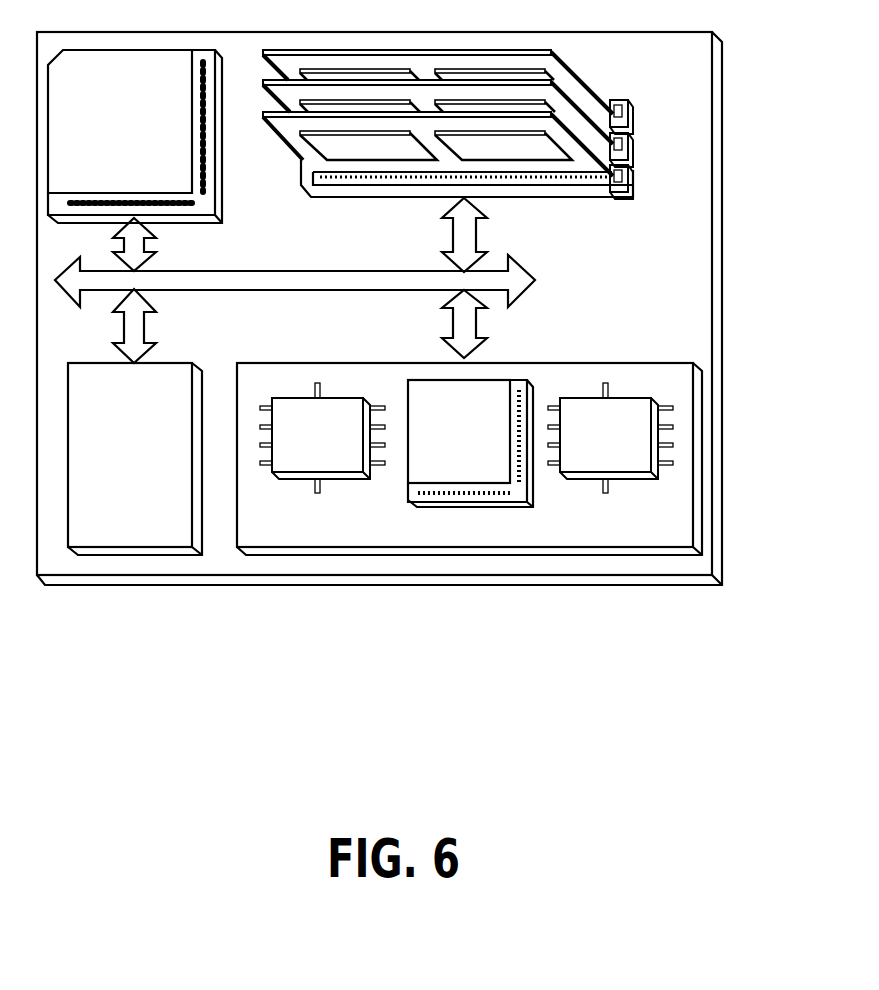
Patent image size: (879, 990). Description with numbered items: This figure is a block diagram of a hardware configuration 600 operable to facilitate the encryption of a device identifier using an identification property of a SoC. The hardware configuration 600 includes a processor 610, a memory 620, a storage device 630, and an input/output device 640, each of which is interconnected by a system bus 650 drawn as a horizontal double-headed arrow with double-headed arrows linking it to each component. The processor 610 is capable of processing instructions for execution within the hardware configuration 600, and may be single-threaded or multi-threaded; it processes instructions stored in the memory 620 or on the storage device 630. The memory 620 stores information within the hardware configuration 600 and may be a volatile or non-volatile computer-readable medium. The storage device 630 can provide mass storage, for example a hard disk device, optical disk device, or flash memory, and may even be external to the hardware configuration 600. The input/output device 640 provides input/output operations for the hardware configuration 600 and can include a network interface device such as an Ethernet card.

The hardware configuration 600 is at (739, 753).
The processor 610 is at (181, 184).
The memory 620 is at (604, 98).
The storage device 630 is at (171, 539).
The input/output device 640 is at (650, 363).
The system bus 650 is at (292, 290).